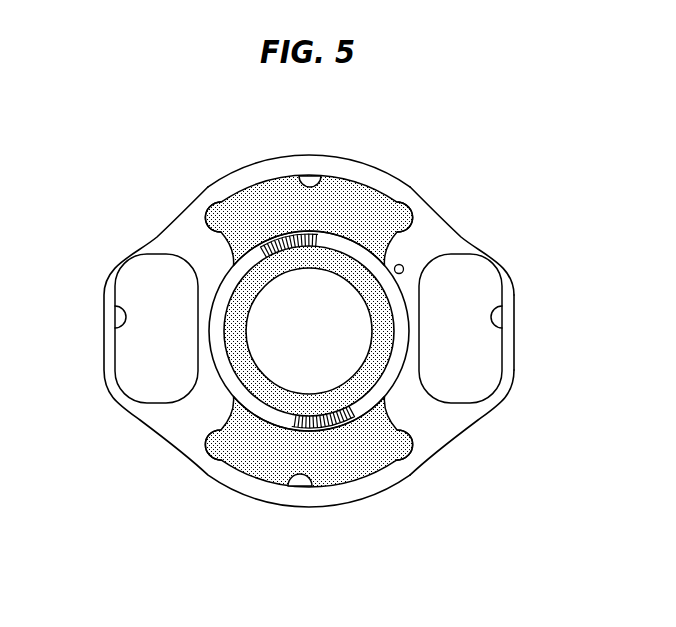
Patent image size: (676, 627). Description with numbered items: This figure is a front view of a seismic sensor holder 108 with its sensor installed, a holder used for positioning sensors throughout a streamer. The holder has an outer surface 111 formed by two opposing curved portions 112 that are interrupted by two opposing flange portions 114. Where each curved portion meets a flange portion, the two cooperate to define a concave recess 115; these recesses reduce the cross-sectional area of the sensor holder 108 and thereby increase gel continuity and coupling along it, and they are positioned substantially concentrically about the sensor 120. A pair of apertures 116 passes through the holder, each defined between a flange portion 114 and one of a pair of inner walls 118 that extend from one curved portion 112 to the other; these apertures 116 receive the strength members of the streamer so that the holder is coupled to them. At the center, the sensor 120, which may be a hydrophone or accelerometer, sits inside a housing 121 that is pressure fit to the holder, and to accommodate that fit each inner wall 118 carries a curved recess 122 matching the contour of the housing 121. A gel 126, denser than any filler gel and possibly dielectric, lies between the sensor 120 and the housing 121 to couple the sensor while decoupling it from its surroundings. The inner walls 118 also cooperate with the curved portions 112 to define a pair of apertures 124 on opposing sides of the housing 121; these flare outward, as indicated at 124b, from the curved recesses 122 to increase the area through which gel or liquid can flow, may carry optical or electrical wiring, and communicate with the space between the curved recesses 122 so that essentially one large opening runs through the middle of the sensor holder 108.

The sensor holder 108 is at (233, 147).
The outer surface 111 is at (418, 183).
The curved portions 112 is at (378, 170).
The flange portions 114 is at (512, 362).
The concave recess 115 is at (453, 228).
The apertures 116 is at (118, 318).
The inner walls 118 is at (418, 415).
The sensor 120 is at (364, 300).
The housing 121 is at (352, 417).
The curved recess 122 is at (208, 335).
The apertures 124 is at (300, 177).
The outward flare of aperture 124b is at (216, 200).
The gel 126 is at (282, 400).